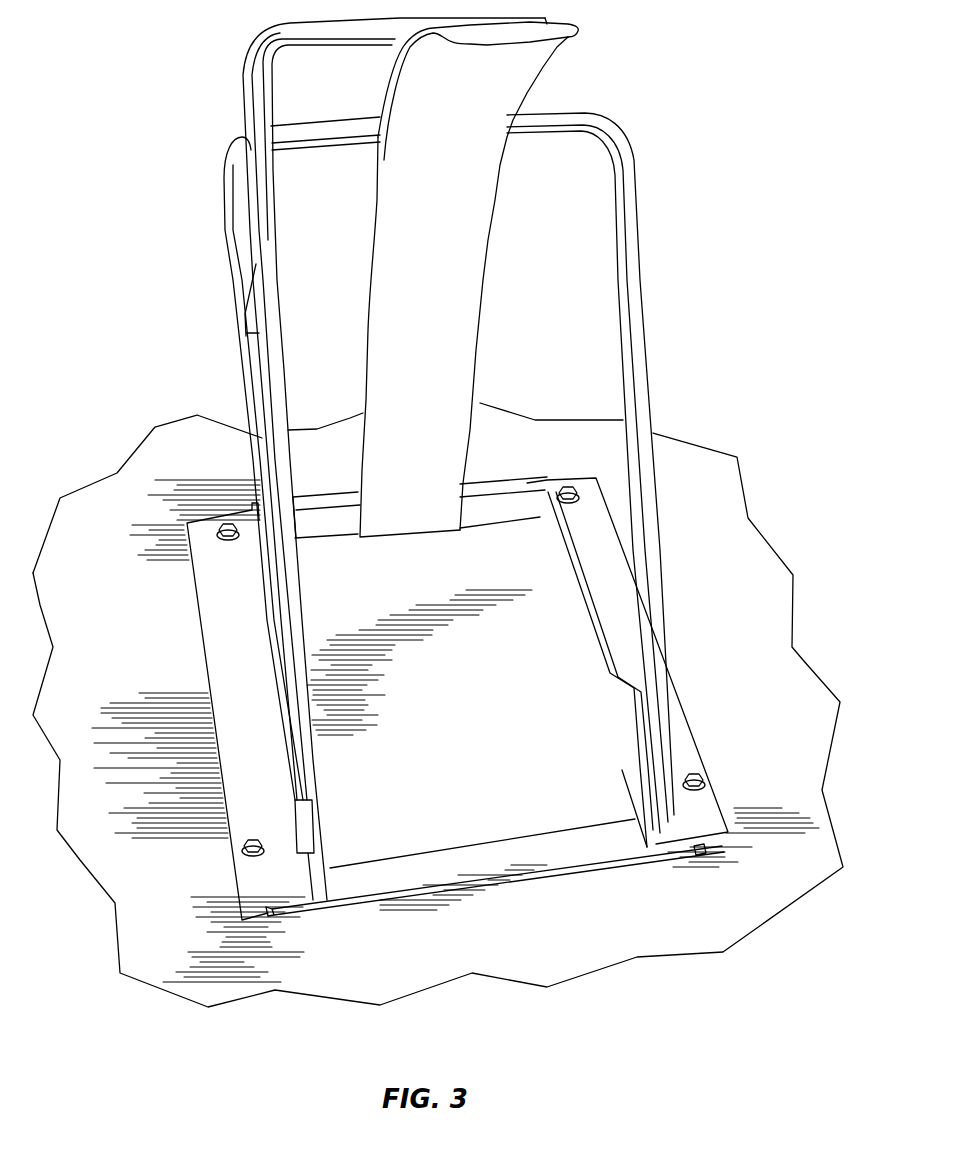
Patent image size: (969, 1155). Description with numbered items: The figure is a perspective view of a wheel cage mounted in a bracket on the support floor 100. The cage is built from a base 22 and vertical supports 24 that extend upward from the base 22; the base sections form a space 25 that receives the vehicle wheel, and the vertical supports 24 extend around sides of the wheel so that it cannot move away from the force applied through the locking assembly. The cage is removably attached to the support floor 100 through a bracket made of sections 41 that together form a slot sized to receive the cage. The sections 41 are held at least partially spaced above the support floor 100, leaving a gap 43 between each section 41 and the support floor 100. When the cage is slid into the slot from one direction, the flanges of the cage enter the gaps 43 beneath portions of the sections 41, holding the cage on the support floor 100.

The base 22 is at (628, 722).
The vertical support 24 is at (264, 438).
The space 25 is at (452, 688).
The section 41 is at (243, 718).
The gap 43 is at (272, 915).
The support floor 100 is at (660, 915).